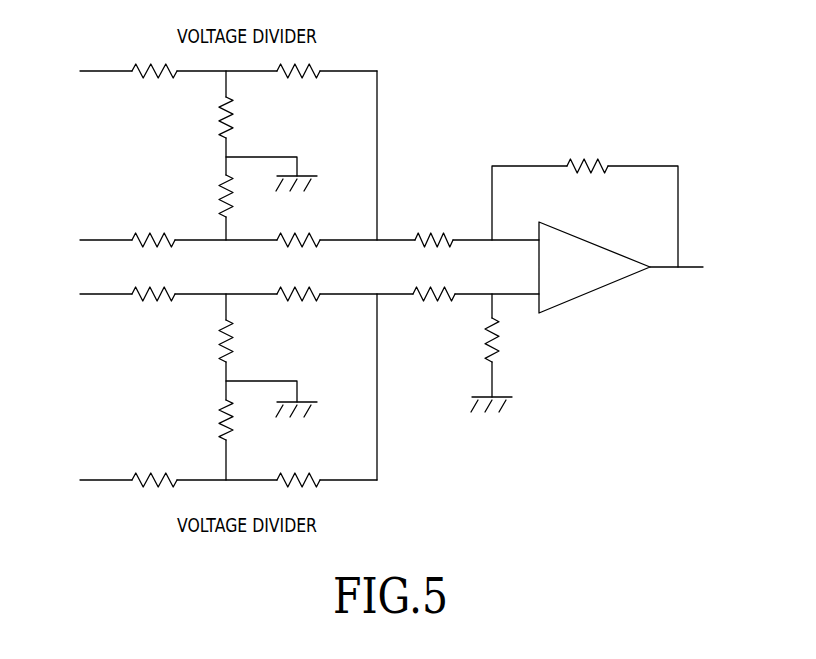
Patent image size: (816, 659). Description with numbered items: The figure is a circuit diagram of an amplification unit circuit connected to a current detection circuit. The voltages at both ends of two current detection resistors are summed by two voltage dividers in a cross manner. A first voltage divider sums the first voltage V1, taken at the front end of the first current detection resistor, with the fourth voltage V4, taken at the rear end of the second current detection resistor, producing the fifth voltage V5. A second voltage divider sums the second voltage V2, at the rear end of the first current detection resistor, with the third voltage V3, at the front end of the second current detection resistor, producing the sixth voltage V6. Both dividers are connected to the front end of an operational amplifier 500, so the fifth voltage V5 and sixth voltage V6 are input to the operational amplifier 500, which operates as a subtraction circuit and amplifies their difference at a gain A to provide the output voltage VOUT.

The operational amplifier 500 is at (600, 246).
The first voltage V1 is at (94, 74).
The second voltage V2 is at (94, 297).
The third voltage V3 is at (94, 483).
The fourth voltage V4 is at (94, 243).
The fifth voltage V5 is at (367, 227).
The sixth voltage V6 is at (366, 282).
The output voltage VOUT is at (697, 268).